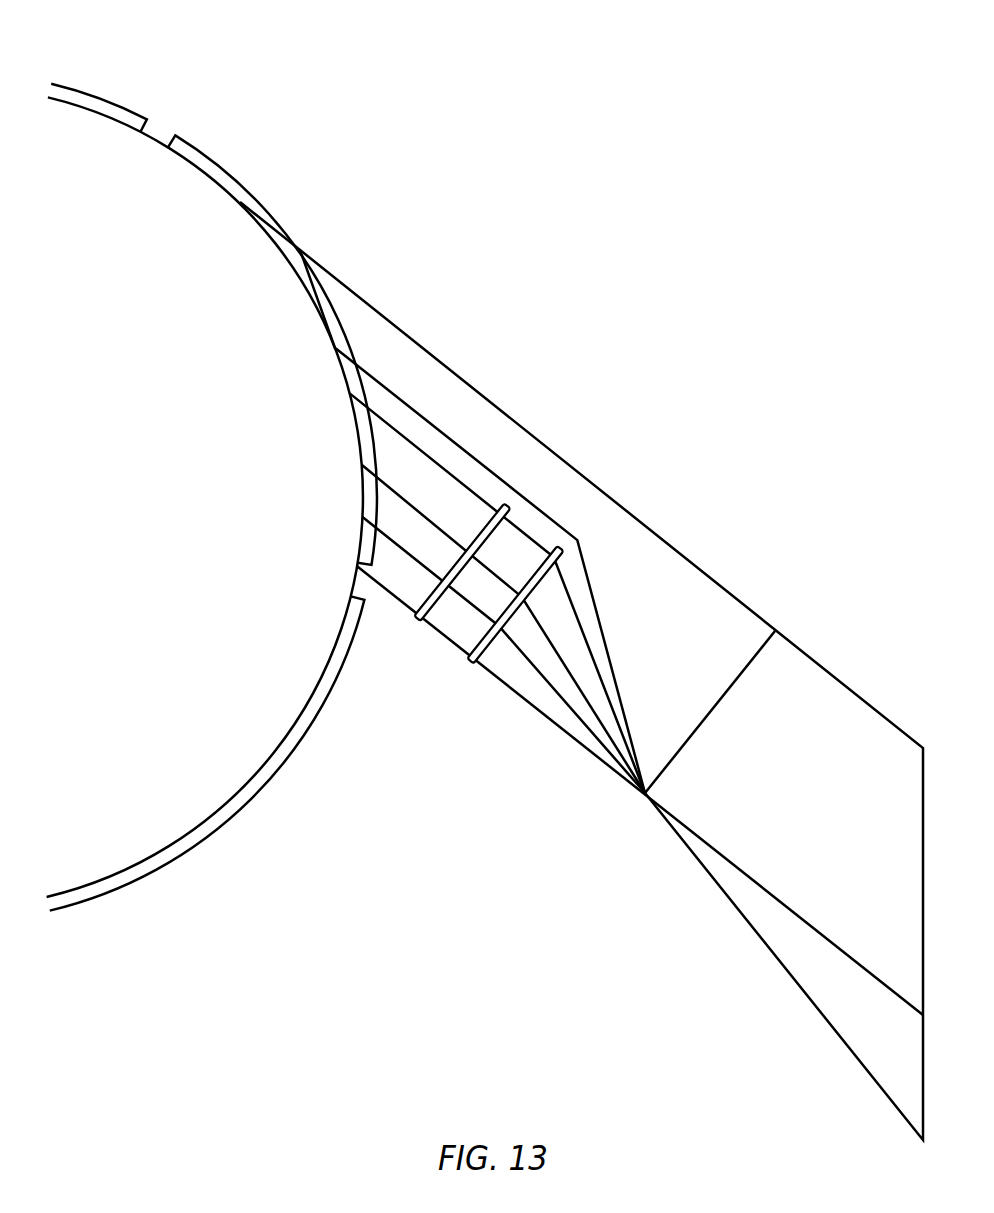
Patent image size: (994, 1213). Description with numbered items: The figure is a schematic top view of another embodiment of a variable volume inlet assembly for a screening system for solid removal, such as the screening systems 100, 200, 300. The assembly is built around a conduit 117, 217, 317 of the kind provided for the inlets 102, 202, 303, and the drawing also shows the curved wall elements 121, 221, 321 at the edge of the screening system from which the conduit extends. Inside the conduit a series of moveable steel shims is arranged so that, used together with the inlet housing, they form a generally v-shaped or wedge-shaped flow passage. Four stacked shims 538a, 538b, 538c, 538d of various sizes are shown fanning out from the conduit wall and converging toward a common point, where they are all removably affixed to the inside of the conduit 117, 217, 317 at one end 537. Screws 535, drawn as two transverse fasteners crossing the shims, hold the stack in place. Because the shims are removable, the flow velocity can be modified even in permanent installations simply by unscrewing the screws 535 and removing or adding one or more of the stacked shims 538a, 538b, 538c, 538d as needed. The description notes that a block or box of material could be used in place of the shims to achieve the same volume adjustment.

The screening system 100 is at (485, 609).
The screening system 200 is at (485, 609).
The screening system 300 is at (485, 609).
The inlet 102 is at (581, 671).
The inlet 202 is at (581, 671).
The inlet 303 is at (603, 479).
The ring segment 121 is at (218, 497).
The ring segment 221 is at (218, 497).
The ring segment 321 is at (310, 130).
The conduit 117 is at (640, 790).
The conduit 217 is at (640, 790).
The conduit 317 is at (568, 733).
The screws 535 is at (418, 623).
The end 537 is at (647, 780).
The stacked shim 538a is at (413, 562).
The stacked shim 538b is at (404, 494).
The stacked shim 538c is at (413, 442).
The stacked shim 538d is at (604, 635).